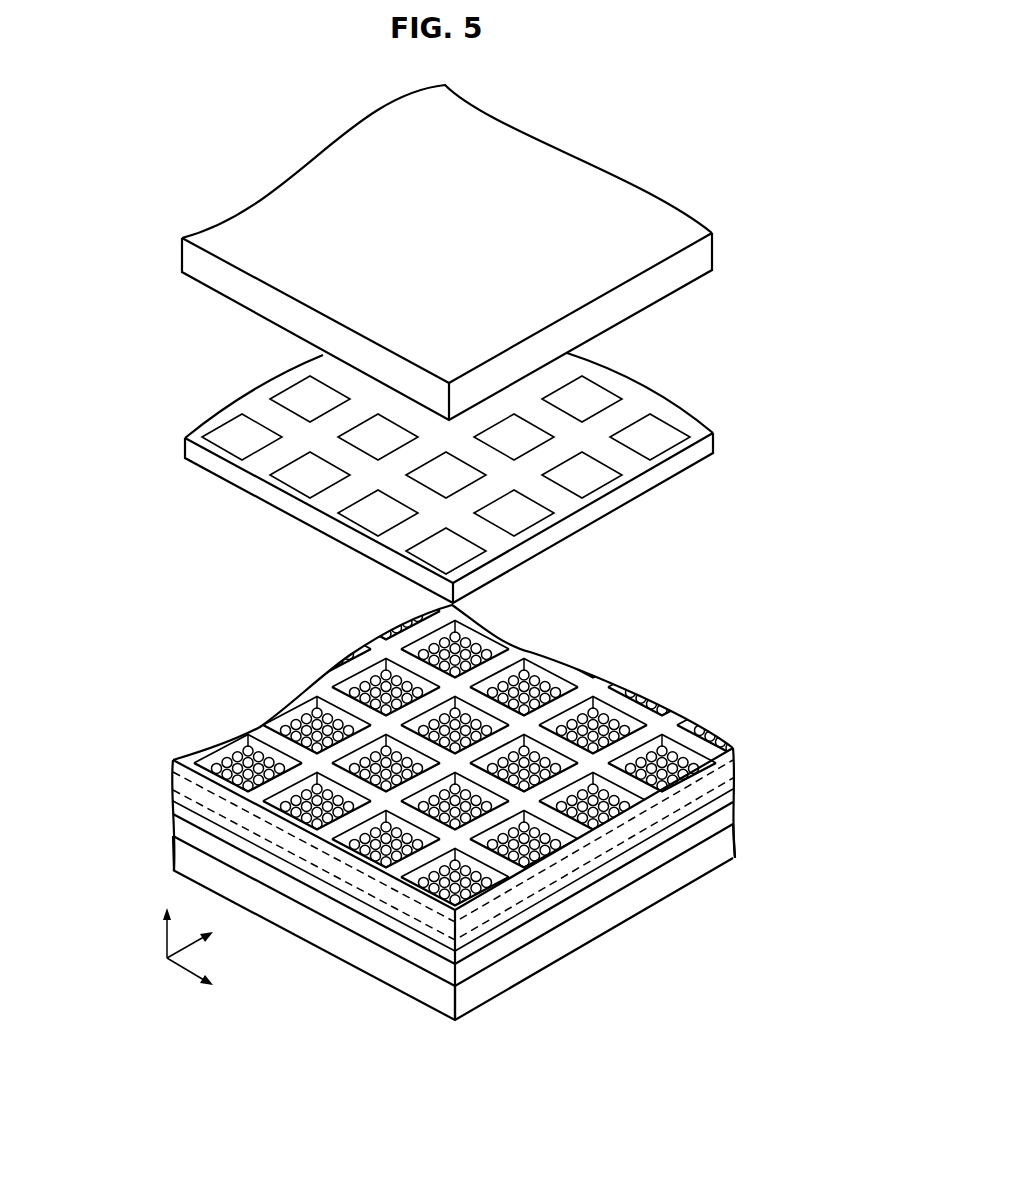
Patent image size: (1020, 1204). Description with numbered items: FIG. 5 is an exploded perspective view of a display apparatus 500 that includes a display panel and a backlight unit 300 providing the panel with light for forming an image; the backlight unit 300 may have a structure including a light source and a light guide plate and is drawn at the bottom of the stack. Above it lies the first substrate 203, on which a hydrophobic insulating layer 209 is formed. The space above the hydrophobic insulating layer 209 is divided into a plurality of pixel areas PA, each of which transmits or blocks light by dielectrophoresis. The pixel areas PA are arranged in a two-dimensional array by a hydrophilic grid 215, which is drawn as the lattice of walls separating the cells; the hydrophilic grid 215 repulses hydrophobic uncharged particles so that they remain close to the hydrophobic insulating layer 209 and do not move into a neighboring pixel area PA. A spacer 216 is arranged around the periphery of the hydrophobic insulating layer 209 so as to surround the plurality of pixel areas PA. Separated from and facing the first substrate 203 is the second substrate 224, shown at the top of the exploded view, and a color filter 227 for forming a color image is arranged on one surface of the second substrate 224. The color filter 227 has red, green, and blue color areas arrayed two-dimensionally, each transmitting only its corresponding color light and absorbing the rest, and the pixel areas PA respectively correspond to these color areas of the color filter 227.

The display apparatus 500 is at (632, 134).
The second substrate 224 is at (635, 305).
The color filter 227 is at (637, 492).
The hydrophilic grid 215 is at (633, 740).
The pixel area PA is at (670, 738).
The spacer 216 is at (722, 742).
The hydrophobic insulating layer 209 is at (731, 789).
The first substrate 203 is at (731, 814).
The backlight unit 300 is at (731, 847).